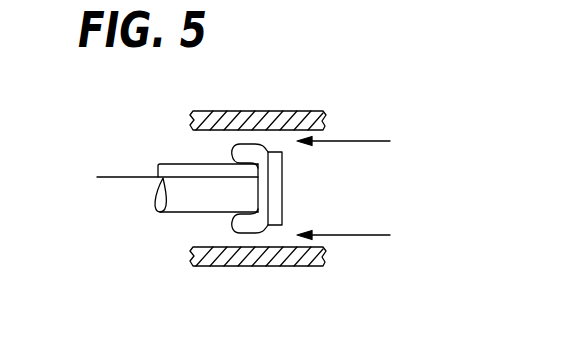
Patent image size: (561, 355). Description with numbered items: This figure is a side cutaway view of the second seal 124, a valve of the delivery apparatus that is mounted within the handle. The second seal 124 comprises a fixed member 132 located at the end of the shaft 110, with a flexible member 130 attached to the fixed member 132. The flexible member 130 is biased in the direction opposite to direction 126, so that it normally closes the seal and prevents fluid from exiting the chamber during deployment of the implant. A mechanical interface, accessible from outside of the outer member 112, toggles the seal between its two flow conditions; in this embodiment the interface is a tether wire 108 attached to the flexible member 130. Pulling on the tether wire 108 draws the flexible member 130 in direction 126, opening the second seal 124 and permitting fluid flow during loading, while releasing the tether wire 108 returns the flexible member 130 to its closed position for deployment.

The tether wire 108 is at (120, 178).
The shaft 110 is at (170, 164).
The outer member 112 is at (295, 111).
The second seal 124 is at (248, 107).
The direction 126 is at (368, 141).
The flexible member 130 is at (246, 233).
The fixed member 132 is at (283, 190).